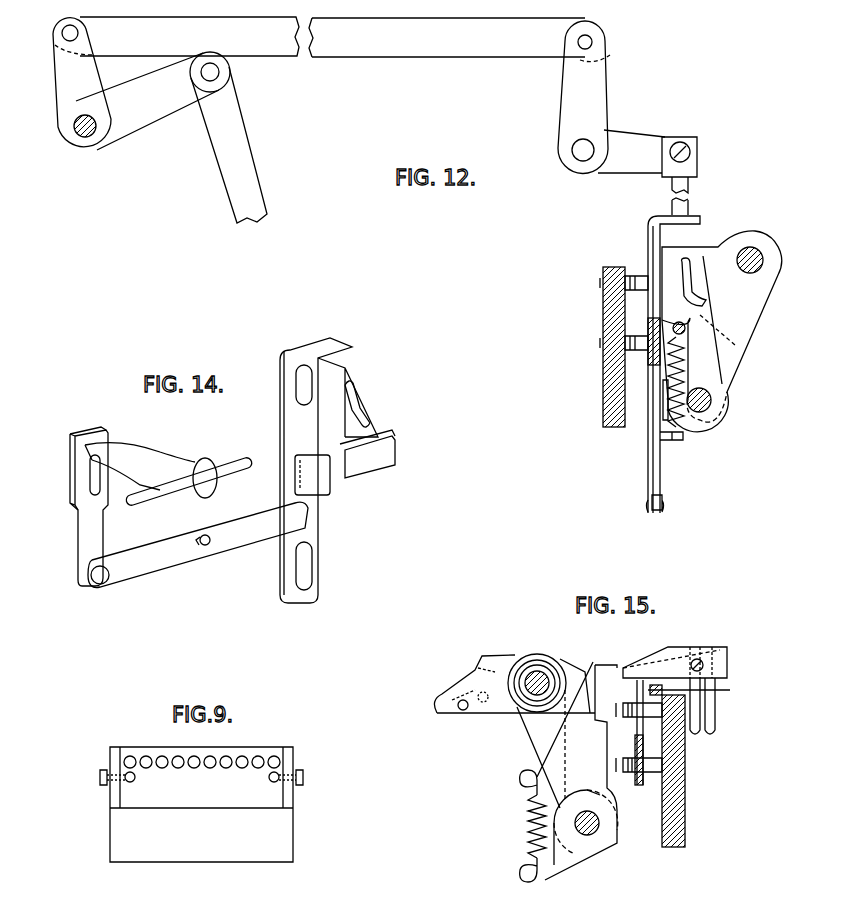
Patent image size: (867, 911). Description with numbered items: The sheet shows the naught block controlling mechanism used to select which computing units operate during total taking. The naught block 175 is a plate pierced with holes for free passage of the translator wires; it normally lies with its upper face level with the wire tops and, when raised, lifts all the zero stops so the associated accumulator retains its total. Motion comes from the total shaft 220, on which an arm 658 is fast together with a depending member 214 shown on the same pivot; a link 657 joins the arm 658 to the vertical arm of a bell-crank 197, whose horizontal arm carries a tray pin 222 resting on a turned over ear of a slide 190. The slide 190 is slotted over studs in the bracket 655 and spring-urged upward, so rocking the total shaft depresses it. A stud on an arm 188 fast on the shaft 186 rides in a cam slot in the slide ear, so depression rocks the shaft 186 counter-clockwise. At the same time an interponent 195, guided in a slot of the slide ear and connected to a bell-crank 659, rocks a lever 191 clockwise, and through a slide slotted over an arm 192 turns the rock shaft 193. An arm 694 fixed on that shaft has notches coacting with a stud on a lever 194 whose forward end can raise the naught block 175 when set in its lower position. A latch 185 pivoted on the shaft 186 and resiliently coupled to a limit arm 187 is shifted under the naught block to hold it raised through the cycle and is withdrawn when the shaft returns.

In FIG. 12, the link 657 is at (467, 50).
In FIG. 12, the arm 658 is at (62, 80).
In FIG. 12, the total shaft 220 is at (76, 137).
In FIG. 12, the arm 214 is at (244, 163).
In FIG. 12, the bell-crank 197 is at (612, 130).
In FIG. 12, the tray pin 222 is at (688, 206).
In FIG. 12, the bracket 655 is at (648, 242).
In FIG. 15, the bracket 655 is at (612, 788).
In FIG. 12, the rock shaft 193 is at (752, 256).
In FIG. 14, the rock shaft 193 is at (238, 466).
In FIG. 15, the rock shaft 193 is at (540, 676).
In FIG. 12, the arm 188 is at (730, 392).
In FIG. 12, the shaft 186 is at (706, 410).
In FIG. 15, the shaft 186 is at (592, 832).
In FIG. 12, the interponent 195 is at (666, 382).
In FIG. 14, the interponent 195 is at (375, 467).
In FIG. 12, the lever 191 is at (668, 410).
In FIG. 14, the lever 191 is at (177, 560).
In FIG. 12, the slide 190 is at (668, 477).
In FIG. 14, the slide 190 is at (332, 350).
In FIG. 14, the bell-crank 659 is at (73, 455).
In FIG. 14, the arm 192 is at (163, 462).
In FIG. 15, the arm 694 is at (492, 660).
In FIG. 15, the lever 194 is at (478, 714).
In FIG. 15, the latch 185 is at (540, 722).
In FIG. 15, the limit arm 187 is at (546, 776).
In FIG. 15, the naught block 175 is at (660, 662).
In FIG. 9, the naught block 175 is at (284, 833).